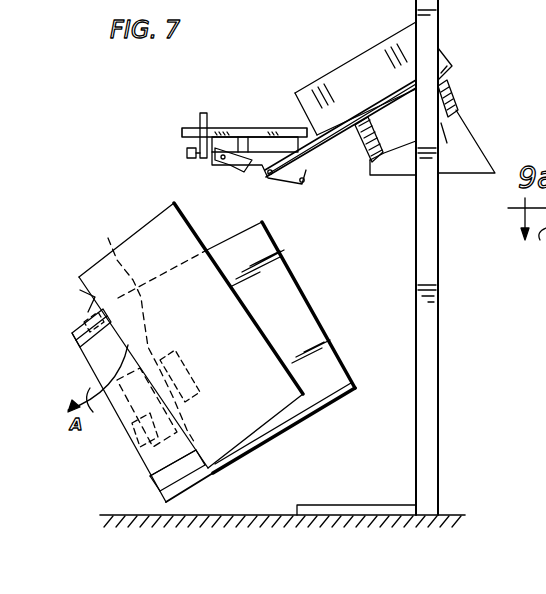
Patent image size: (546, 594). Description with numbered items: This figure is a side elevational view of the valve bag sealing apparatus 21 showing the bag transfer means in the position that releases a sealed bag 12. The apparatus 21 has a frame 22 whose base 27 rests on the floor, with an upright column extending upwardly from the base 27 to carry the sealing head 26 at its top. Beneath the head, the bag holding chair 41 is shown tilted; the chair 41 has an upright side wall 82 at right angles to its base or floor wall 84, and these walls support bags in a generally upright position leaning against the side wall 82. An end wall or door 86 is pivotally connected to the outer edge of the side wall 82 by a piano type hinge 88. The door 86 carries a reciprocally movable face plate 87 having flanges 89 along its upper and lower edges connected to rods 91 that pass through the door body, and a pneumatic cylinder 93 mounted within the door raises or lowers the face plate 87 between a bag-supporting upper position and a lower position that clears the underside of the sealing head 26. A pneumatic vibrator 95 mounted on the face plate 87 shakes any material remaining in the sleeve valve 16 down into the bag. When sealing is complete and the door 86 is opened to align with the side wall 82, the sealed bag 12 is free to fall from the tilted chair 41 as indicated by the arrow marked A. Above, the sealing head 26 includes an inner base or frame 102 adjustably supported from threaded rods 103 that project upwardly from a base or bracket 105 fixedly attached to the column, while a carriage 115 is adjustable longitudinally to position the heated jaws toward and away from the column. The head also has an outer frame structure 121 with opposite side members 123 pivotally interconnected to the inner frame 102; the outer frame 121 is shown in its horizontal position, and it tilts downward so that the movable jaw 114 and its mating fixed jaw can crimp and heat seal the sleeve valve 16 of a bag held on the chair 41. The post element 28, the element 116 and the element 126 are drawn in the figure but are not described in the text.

The sealed bag 12 is at (194, 336).
The sleeve valve 16 is at (175, 202).
The valve bag sealing apparatus 21 is at (252, 567).
The frame 22 is at (456, 257).
The sealing head 26 is at (264, 101).
The base 27 is at (366, 515).
The post 28 is at (430, 265).
The bag holding chair 41 is at (245, 347).
The upright side wall 82 is at (313, 334).
The base or floor wall 84 is at (300, 422).
The door or end wall 86 is at (132, 444).
The face plate 87 is at (158, 414).
The piano type hinge 88 is at (143, 330).
The flanges 89 is at (85, 330).
The rods 91 is at (164, 485).
The pneumatic cylinder 93 is at (172, 418).
The pneumatic vibrator 95 is at (92, 310).
The inner base or frame 102 is at (322, 152).
The threaded rods 103 is at (372, 160).
The base or bracket 105 is at (470, 147).
The movable jaw 114 is at (200, 160).
The carriage 115 is at (377, 90).
The knob 116 is at (187, 153).
The outer frame structure 121 is at (206, 135).
The side members 123 is at (244, 128).
The pin 126 is at (205, 113).